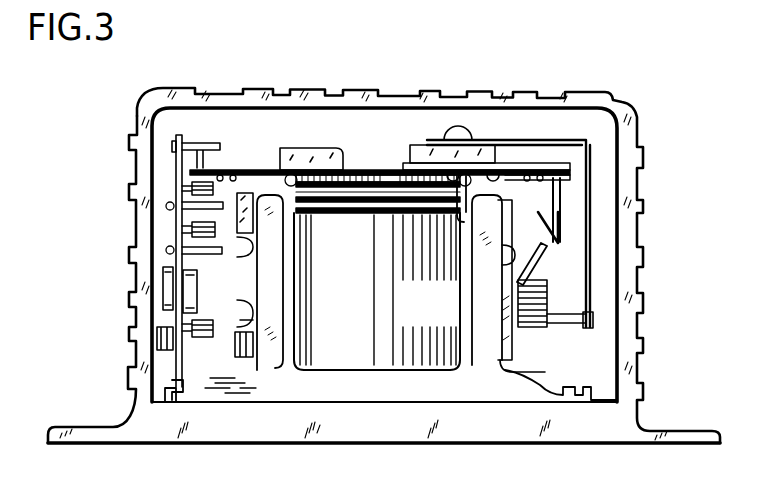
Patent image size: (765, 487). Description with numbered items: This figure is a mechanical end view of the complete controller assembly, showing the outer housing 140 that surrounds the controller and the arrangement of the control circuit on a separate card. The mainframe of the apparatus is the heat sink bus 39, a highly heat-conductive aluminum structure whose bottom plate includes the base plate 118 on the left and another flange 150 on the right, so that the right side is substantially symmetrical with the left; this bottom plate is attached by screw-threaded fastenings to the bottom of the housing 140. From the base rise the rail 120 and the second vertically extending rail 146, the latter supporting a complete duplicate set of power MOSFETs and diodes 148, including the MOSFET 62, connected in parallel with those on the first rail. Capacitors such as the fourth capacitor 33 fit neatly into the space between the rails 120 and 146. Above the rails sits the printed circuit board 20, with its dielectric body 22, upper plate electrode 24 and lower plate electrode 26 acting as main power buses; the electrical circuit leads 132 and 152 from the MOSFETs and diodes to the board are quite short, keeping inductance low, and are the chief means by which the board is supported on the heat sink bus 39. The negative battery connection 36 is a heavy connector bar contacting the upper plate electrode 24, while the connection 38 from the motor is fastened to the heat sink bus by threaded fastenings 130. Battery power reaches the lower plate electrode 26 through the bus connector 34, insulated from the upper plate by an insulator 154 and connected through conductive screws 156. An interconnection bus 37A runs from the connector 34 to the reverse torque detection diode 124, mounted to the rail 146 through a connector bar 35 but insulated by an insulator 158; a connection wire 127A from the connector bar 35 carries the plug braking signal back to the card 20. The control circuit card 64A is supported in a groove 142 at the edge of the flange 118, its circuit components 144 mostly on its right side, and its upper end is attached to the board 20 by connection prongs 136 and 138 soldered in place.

The printed circuit board 20 is at (351, 143).
The dielectric body 22 is at (368, 170).
The upper plate electrode 24 is at (378, 176).
The lower plate electrode 26 is at (503, 175).
The fourth capacitor 33 is at (357, 347).
The bus connector 34 is at (424, 150).
The connector bar 35 is at (517, 367).
The negative battery connection 36 is at (320, 148).
The interconnection bus 37A is at (588, 258).
The connection from the motor 38 is at (240, 345).
The heat sink bus 39 is at (240, 383).
The MOSFET 62 is at (247, 168).
The control circuit card 64A is at (186, 180).
The base plate 118 is at (245, 377).
The rail 120 is at (270, 268).
The reverse torque detection diode 124 is at (531, 295).
The connection wire 127A is at (558, 237).
The threaded fastenings 130 is at (222, 312).
The electrical circuit leads 132 is at (228, 162).
The connection prong 136 is at (176, 146).
The connection prong 138 is at (112, 240).
The outer housing 140 is at (136, 277).
The groove 142 is at (165, 374).
The circuit components 144 is at (175, 250).
The second vertically extending rail 146 is at (476, 291).
The duplicate set of power MOSFETs and diodes 148 is at (540, 214).
The flange 150 is at (537, 392).
The electrical circuit leads 152 is at (520, 192).
The insulator 154 is at (497, 163).
The conductive screws 156 is at (458, 175).
The insulator 158 is at (502, 315).